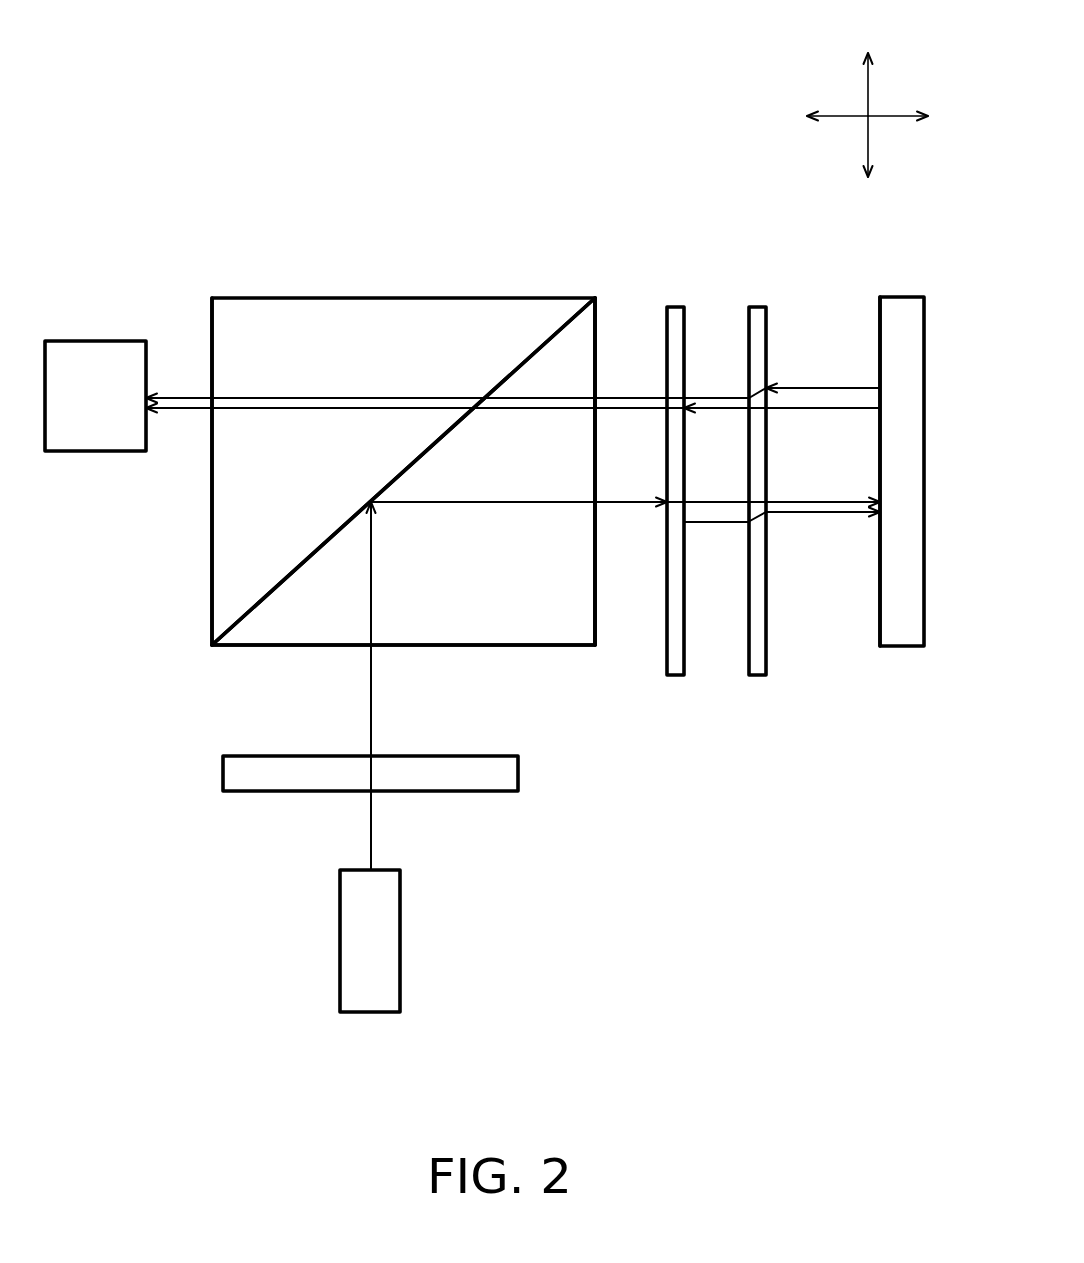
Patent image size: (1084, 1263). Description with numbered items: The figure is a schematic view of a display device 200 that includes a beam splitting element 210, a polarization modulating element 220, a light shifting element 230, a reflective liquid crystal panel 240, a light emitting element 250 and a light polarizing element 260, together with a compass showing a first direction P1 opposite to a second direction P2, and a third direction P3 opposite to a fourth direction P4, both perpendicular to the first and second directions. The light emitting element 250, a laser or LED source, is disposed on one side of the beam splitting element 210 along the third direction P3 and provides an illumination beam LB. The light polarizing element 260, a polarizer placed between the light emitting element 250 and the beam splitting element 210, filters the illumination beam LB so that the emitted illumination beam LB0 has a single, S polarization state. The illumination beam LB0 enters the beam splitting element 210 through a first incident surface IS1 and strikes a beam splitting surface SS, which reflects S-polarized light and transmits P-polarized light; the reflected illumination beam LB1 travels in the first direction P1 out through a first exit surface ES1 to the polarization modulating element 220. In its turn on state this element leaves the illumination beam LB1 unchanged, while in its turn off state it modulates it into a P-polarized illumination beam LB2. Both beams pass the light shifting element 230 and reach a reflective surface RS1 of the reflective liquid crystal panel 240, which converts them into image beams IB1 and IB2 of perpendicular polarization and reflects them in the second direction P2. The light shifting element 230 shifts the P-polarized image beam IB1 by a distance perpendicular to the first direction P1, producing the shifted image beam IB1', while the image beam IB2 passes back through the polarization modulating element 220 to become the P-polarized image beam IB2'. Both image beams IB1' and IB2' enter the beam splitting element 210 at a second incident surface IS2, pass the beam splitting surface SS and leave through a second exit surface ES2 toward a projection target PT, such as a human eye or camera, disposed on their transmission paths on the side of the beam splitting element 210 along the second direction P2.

The display device 200 is at (912, 874).
The beam splitting element 210 is at (251, 295).
The polarization modulating element 220 is at (675, 303).
The light shifting element 230 is at (757, 303).
The reflective liquid crystal panel 240 is at (901, 294).
The light emitting element 250 is at (400, 950).
The light polarizing element 260 is at (519, 773).
The projection target PT is at (72, 340).
The first exit surface ES1 is at (593, 557).
The second exit surface ES2 is at (225, 362).
The first incident surface IS1 is at (278, 648).
The second incident surface IS2 is at (607, 322).
The beam splitting surface SS is at (316, 556).
The reflective surface RS1 is at (878, 603).
The illumination beam LB is at (372, 833).
The illumination beam LB0 is at (372, 599).
The illumination beam LB1 is at (493, 502).
The illumination beam LB2 is at (813, 516).
The image beam IB1 is at (814, 369).
The image beam IB2 is at (782, 433).
The shifted image beam IB1' is at (447, 373).
The image beam IB2' is at (415, 431).
The first direction P1 is at (915, 114).
The second direction P2 is at (820, 114).
The third direction P3 is at (867, 165).
The fourth direction P4 is at (867, 68).